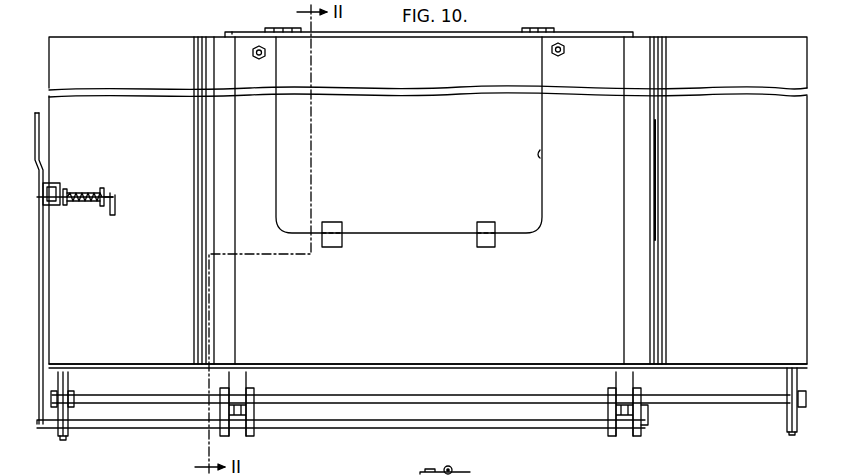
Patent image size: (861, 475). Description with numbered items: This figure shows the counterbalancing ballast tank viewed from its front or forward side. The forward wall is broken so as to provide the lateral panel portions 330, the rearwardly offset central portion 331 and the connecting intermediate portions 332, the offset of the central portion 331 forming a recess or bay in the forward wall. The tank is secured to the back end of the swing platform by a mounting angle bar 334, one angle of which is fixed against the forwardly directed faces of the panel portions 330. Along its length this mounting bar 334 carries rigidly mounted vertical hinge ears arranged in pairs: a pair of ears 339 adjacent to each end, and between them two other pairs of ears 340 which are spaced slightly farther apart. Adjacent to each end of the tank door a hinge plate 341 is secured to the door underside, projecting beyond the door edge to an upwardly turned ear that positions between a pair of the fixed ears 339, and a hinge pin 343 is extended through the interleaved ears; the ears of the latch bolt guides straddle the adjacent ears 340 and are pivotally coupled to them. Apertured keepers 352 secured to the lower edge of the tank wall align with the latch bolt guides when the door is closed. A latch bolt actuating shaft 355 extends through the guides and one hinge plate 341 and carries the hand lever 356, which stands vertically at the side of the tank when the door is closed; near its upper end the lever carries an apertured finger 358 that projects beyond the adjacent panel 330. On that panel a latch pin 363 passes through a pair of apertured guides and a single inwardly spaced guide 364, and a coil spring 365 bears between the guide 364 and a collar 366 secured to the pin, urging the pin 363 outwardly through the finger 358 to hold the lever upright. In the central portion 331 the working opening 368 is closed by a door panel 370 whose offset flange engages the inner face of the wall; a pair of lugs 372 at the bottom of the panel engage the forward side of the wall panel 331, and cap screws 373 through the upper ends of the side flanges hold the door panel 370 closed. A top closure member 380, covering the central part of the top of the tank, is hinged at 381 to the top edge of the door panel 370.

The lateral panel portions 330 is at (742, 48).
The rearwardly offset central portion 331 is at (610, 170).
The connecting intermediate portions 332 is at (657, 207).
The mounting angle bar 334 is at (694, 366).
The hinge ears 339 is at (66, 373).
The hinge ears 340 is at (248, 378).
The hinge plate 341 is at (65, 440).
The hinge pin 343 is at (72, 399).
The apertured keepers 352 is at (642, 416).
The latch bolt actuating shaft 355 is at (396, 425).
The hand lever 356 is at (43, 295).
The apertured finger 358 is at (58, 185).
The latch pin 363 is at (116, 203).
The guide 364 is at (104, 192).
The coil spring 365 is at (84, 204).
The collar 366 is at (67, 192).
The working opening 368 is at (541, 152).
The door panel 370 is at (532, 184).
The lugs 372 is at (493, 247).
The cap screws 373 is at (564, 53).
The top closure member 380 is at (403, 472).
The hinge 381 is at (553, 30).